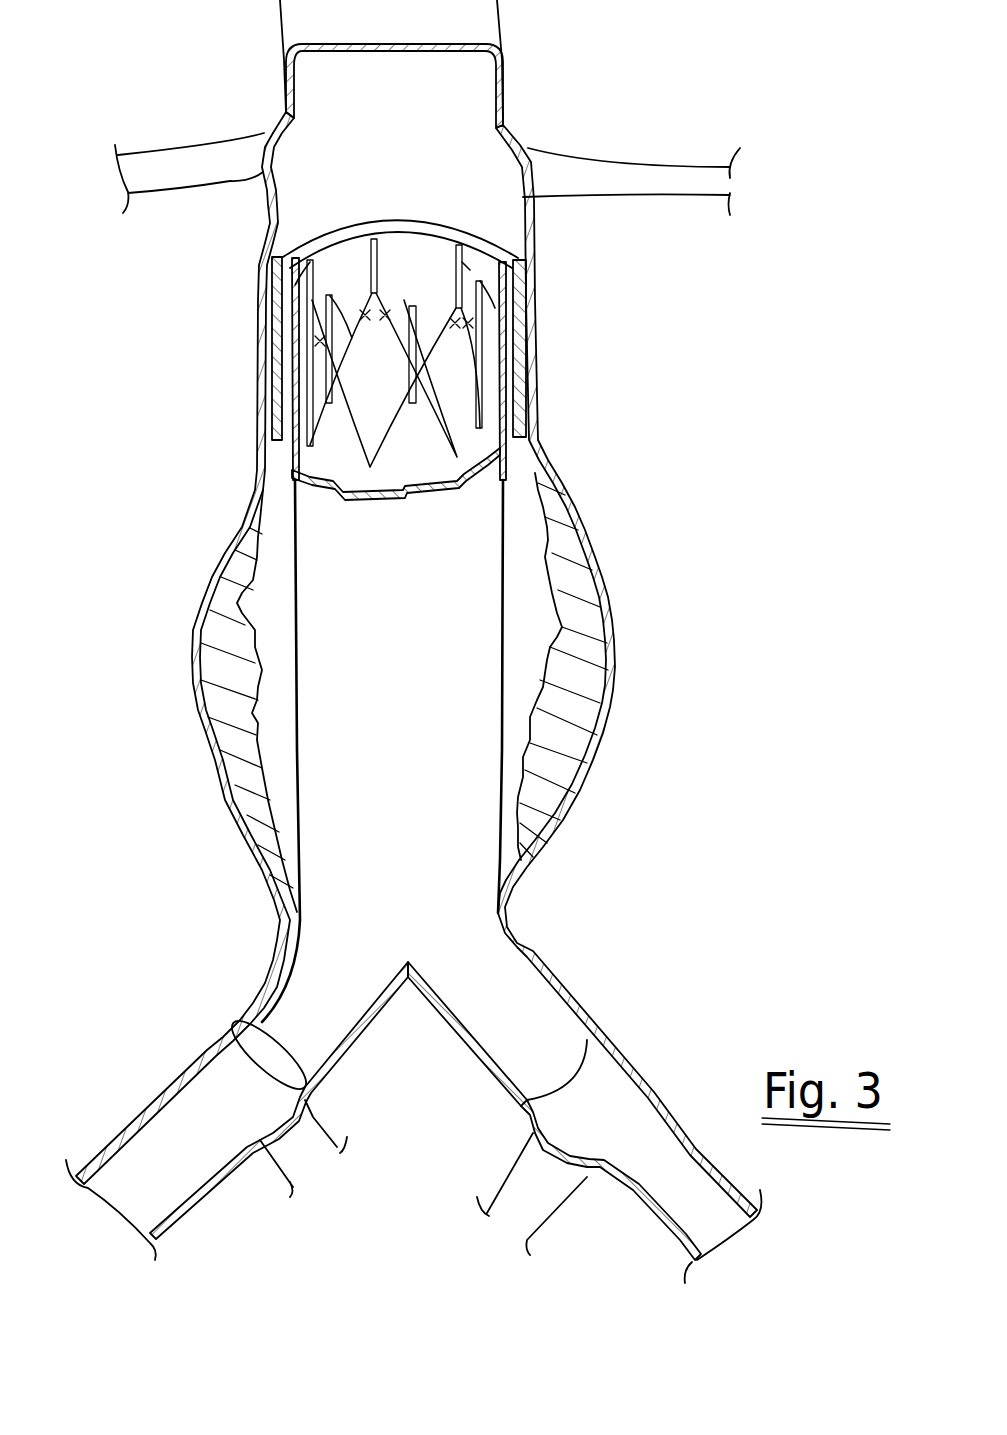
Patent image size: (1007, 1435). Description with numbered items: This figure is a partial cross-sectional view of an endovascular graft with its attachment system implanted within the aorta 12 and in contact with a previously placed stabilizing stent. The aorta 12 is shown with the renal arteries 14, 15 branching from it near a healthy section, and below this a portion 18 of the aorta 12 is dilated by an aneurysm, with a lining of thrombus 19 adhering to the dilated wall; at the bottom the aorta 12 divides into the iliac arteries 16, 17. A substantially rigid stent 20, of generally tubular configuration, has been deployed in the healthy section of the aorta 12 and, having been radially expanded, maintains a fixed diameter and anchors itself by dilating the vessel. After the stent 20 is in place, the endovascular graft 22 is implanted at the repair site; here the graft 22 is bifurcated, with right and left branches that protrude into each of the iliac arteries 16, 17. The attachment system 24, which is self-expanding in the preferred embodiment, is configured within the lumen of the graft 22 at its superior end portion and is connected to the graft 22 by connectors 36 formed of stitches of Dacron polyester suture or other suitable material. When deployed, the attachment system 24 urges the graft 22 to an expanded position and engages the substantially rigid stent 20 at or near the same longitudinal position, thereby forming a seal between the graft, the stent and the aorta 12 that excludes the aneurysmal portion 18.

The aorta 12 is at (493, 21).
The renal artery 14 is at (663, 160).
The renal artery 15 is at (186, 147).
The iliac artery 16 is at (583, 1020).
The iliac artery 17 is at (243, 1012).
The portion of the aorta dilated by an aneurysm 18 is at (707, 443).
The lining of thrombus 19 is at (225, 633).
The substantially rigid stent 20 is at (527, 453).
The endovascular graft 22 is at (493, 847).
The attachment system 24 is at (398, 420).
The connectors 36 is at (369, 330).